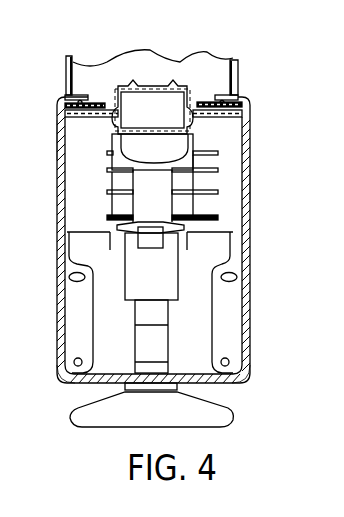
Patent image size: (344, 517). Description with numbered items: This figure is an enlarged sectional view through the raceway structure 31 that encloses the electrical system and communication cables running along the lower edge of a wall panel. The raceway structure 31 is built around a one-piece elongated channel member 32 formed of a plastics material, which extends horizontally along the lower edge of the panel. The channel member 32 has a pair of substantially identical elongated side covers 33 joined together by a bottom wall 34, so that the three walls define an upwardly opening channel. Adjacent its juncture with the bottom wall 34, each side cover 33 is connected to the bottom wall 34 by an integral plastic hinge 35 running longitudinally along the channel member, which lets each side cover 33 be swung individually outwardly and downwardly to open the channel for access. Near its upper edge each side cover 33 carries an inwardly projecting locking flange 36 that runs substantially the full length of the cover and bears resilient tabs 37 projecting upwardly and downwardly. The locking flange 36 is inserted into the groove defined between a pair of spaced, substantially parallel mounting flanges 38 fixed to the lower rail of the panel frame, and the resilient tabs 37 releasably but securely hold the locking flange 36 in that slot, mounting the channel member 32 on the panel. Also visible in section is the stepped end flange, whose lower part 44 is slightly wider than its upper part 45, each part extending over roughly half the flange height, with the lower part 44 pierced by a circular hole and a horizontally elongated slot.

The raceway structure 31 is at (217, 237).
The channel member 32 is at (57, 192).
The side covers 33 is at (60, 150).
The bottom wall 34 is at (101, 381).
The integral plastic hinge 35 is at (75, 377).
The locking flange 36 is at (93, 104).
The resilient tabs 37 is at (216, 121).
The mounting flanges 38 is at (216, 97).
The lower part 44 is at (228, 325).
The upper part 45 is at (246, 219).